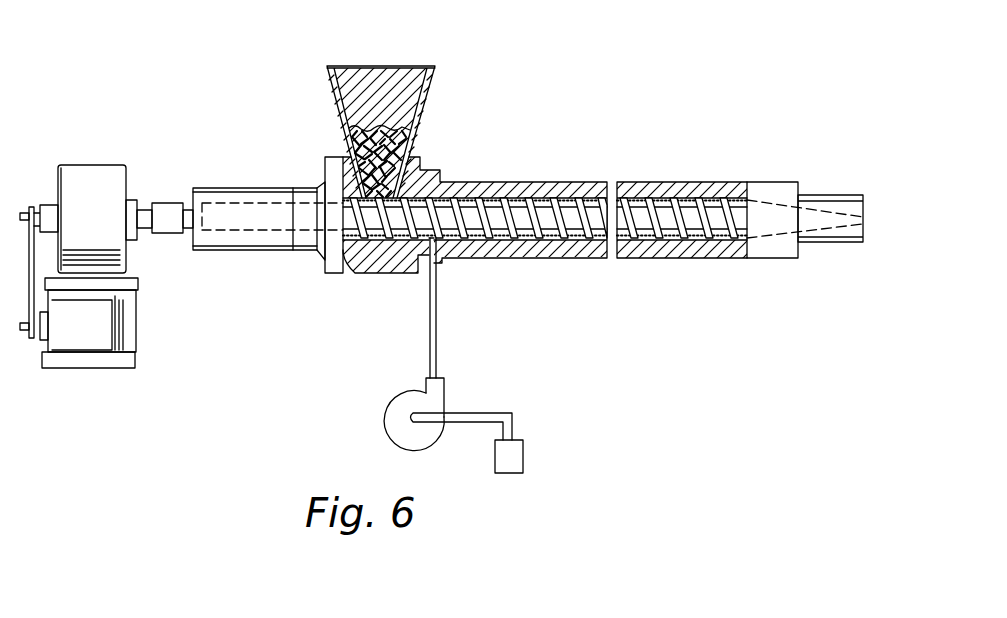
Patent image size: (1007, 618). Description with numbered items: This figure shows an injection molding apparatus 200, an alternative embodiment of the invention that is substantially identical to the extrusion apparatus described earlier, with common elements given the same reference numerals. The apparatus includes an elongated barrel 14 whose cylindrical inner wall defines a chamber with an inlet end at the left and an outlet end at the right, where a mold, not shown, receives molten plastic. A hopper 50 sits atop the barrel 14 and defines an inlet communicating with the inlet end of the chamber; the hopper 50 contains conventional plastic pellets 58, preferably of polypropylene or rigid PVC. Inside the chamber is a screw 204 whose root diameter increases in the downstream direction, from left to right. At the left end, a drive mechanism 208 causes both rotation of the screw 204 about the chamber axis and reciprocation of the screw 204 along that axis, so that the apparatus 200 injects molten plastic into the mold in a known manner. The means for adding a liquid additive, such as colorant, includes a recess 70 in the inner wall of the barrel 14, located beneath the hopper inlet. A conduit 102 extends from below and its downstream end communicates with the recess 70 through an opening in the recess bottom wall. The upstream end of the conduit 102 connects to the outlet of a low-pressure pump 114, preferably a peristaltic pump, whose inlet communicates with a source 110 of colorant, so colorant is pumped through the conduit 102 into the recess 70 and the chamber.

The drive mechanism 208 is at (92, 158).
The hopper 50 is at (327, 70).
The plastic pellets 58 is at (388, 128).
The injection molding apparatus 200 is at (535, 113).
The barrel 14 is at (492, 187).
The screw 204 is at (658, 202).
The recess 70 is at (458, 247).
The conduit 102 is at (430, 311).
The low-pressure pump 114 is at (395, 408).
The source of colorant 110 is at (505, 454).